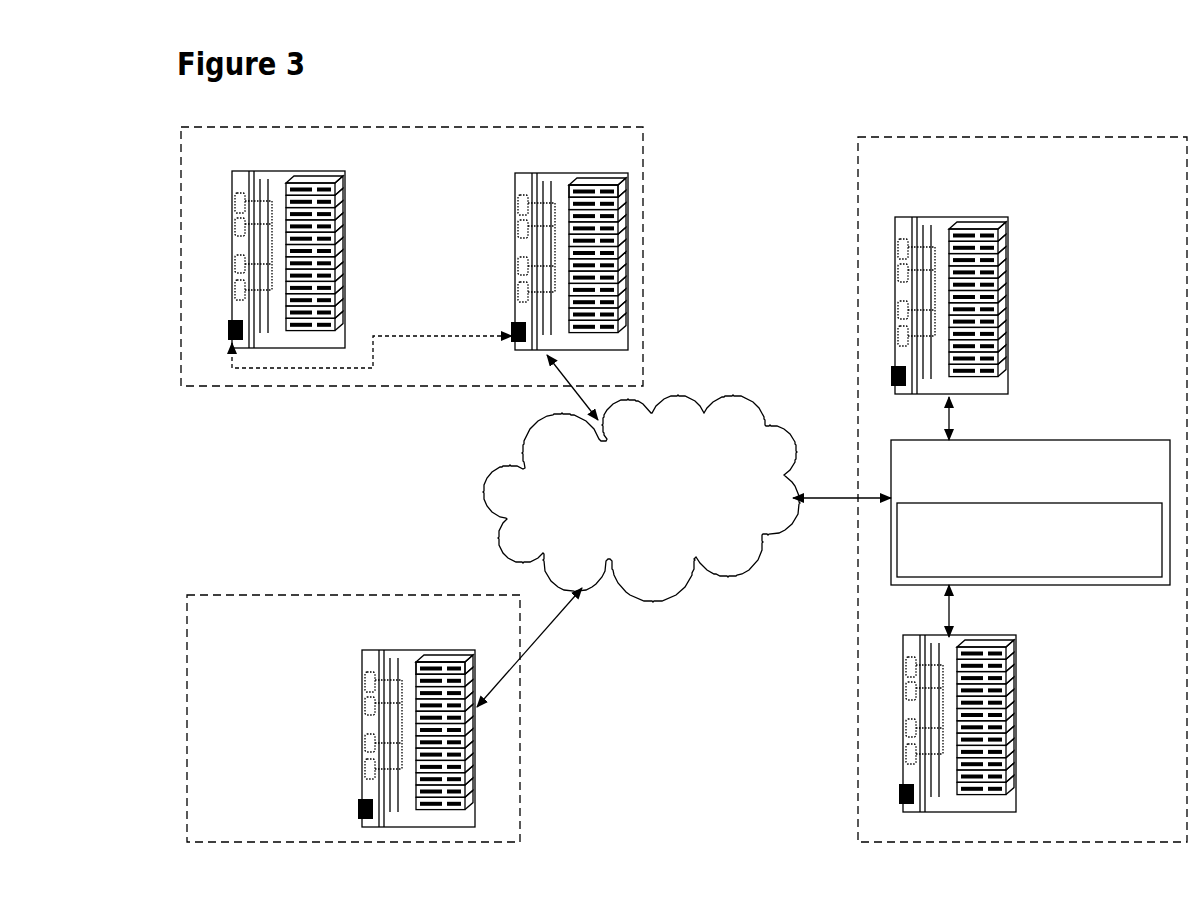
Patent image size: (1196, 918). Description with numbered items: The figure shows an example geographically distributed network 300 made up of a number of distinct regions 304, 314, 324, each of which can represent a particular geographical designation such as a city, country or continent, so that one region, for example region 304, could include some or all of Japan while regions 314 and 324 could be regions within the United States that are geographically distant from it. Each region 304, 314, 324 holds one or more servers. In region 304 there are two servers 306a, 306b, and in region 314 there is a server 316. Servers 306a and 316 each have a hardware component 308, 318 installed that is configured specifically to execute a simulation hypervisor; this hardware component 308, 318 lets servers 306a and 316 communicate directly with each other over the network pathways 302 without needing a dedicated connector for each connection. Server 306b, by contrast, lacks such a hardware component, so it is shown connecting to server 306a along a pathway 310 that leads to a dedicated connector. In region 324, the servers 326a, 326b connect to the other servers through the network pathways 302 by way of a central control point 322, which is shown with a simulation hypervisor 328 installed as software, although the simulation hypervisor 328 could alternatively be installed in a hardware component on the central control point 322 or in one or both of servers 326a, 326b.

The geographically distributed network 300 is at (1050, 96).
The network pathways 302 is at (737, 496).
The region 304 is at (630, 162).
The server 306a is at (515, 247).
The server 306b is at (345, 247).
The hardware component 308 is at (573, 185).
The connection 310 is at (387, 337).
The region 314 is at (504, 631).
The server 316 is at (361, 728).
The hardware component 318 is at (425, 660).
The central control point 322 is at (1127, 438).
The region 324 is at (1168, 182).
The server 326a is at (1012, 268).
The server 326b is at (1017, 687).
The simulation hypervisor 328 is at (1145, 541).